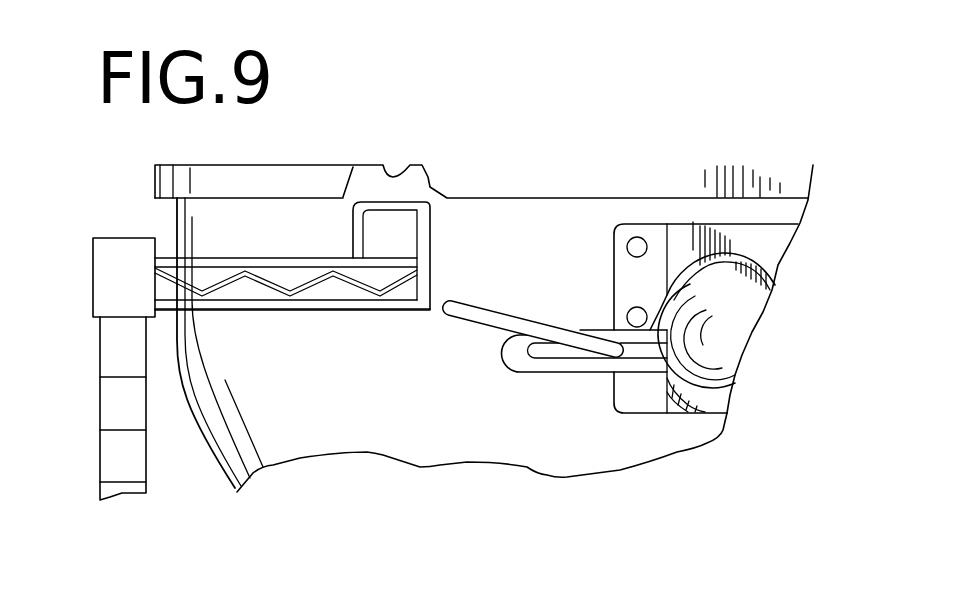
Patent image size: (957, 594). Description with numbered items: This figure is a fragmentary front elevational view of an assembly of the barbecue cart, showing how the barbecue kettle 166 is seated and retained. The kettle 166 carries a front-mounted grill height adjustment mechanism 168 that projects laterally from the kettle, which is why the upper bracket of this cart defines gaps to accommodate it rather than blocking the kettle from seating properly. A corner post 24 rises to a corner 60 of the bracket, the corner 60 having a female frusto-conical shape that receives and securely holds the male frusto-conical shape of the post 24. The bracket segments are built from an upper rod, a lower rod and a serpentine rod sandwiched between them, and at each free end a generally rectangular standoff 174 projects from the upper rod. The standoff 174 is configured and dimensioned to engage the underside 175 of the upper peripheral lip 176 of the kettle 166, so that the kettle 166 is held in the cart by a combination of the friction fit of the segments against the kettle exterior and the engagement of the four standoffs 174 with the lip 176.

The corner post 24 is at (110, 413).
The corner 60 is at (100, 270).
The barbecue kettle 166 is at (615, 437).
The front-mounted grill height adjustment mechanism 168 is at (732, 315).
The standoff 174 is at (430, 237).
The underside 175 is at (393, 176).
The upper peripheral lip 176 is at (623, 180).